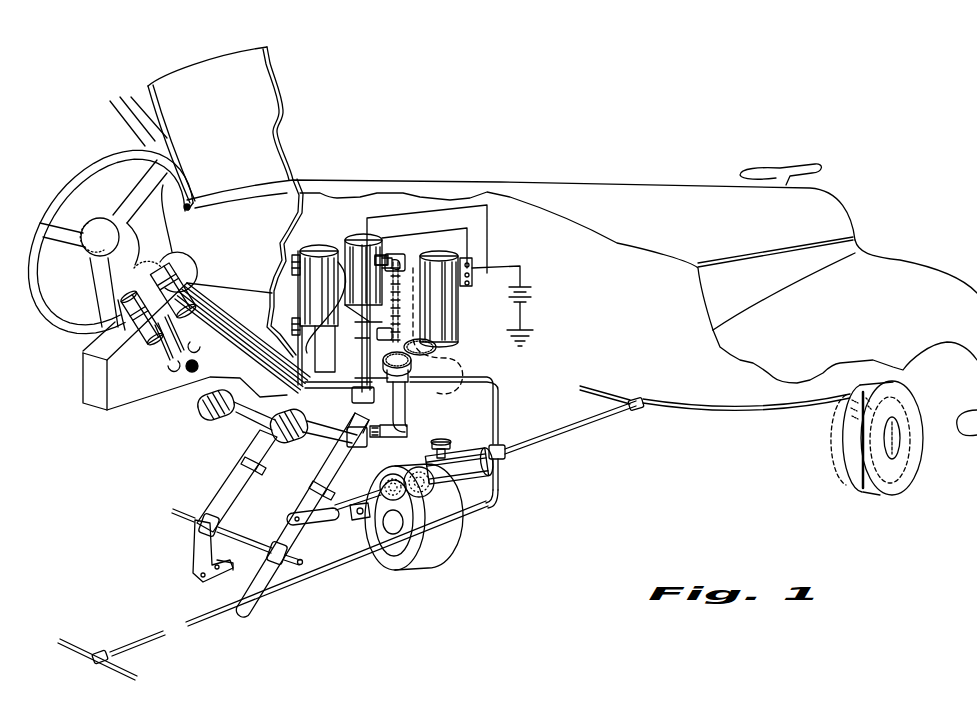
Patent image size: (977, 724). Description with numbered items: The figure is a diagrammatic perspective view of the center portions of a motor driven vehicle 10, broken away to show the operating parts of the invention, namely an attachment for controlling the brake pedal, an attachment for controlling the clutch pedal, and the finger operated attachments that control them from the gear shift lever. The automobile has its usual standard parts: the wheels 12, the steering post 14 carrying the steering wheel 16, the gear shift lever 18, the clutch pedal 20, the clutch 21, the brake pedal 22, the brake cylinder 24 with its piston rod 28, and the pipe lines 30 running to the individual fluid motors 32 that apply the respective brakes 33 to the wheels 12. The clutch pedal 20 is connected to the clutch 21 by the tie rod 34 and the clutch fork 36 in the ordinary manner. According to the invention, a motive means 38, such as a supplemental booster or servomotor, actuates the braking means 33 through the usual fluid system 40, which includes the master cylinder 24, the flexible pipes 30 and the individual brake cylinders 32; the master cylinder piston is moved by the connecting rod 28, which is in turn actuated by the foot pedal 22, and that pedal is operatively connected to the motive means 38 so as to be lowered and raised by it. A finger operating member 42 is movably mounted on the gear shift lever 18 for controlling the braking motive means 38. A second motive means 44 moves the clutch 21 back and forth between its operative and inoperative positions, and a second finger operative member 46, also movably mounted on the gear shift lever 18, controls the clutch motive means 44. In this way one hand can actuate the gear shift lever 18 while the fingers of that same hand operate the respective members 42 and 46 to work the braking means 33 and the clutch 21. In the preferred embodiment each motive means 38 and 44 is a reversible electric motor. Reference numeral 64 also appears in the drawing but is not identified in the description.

The motor driven vehicle 10 is at (637, 190).
The wheels 12 is at (907, 409).
The steering post 14 is at (250, 353).
The steering wheel 16 is at (38, 299).
The gear shift lever 18 is at (170, 350).
The clutch pedal 20 is at (203, 416).
The clutch 21 is at (395, 567).
The brake pedal 22 is at (302, 443).
The brake cylinder 24 is at (465, 447).
The brake cylinder piston rod 28 is at (370, 476).
The pipe lines 30 is at (707, 409).
The fluid motors 32 is at (863, 397).
The brakes 33 is at (843, 460).
The tie rod 34 is at (314, 526).
The clutch fork 36 is at (355, 525).
The motive means 38 is at (463, 309).
The fluid system 40 is at (585, 431).
The finger operating member 42 is at (196, 352).
The motive means 44 is at (357, 240).
The second finger operative member 46 is at (162, 349).
The relay unit 64 is at (412, 256).